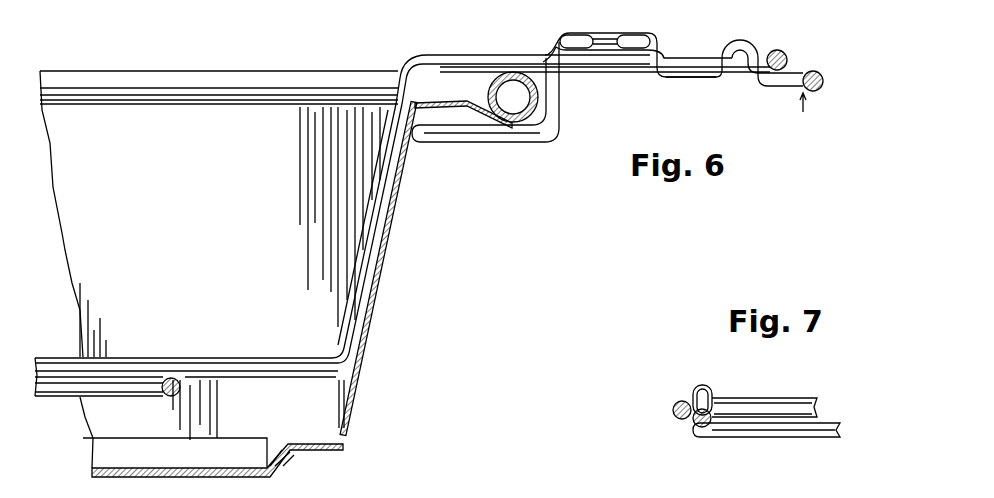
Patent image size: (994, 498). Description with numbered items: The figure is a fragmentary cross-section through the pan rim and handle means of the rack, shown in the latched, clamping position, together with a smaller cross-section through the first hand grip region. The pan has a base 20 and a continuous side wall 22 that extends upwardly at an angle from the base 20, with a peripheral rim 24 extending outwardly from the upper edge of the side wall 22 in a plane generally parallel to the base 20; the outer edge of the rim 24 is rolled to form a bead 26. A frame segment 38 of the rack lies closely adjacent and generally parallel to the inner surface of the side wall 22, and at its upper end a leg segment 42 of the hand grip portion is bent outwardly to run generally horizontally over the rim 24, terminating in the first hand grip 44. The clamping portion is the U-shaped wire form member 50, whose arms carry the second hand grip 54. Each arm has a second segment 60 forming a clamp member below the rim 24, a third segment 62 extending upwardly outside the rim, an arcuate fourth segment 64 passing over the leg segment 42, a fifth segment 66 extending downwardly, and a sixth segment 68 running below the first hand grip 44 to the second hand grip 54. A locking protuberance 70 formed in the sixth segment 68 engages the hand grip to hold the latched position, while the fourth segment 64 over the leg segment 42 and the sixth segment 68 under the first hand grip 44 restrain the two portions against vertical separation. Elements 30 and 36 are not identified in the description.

In FIG. 6, the base 20 is at (228, 467).
In FIG. 6, the side wall 22 is at (143, 117).
In FIG. 6, the rim 24 is at (443, 102).
In FIG. 6, the bead 26 is at (235, 80).
In FIG. 6, the bead 30 is at (180, 393).
In FIG. 6, the ledge 36 is at (263, 360).
In FIG. 6, the frame segment 38 is at (367, 295).
In FIG. 6, the leg segment 42 is at (627, 70).
In FIG. 7, the leg segment 42 is at (672, 408).
In FIG. 6, the first hand grip 44 is at (807, 25).
In FIG. 7, the first hand grip 44 is at (792, 373).
In FIG. 6, the wire form member 50 is at (803, 112).
In FIG. 6, the second hand grip 54 is at (820, 90).
In FIG. 7, the second hand grip 54 is at (772, 432).
In FIG. 6, the second segment 60 is at (470, 133).
In FIG. 6, the third segment 62 is at (550, 88).
In FIG. 6, the fourth segment 64 is at (573, 33).
In FIG. 6, the fifth segment 66 is at (680, 15).
In FIG. 6, the sixth segment 68 is at (697, 77).
In FIG. 7, the sixth segment 68 is at (693, 423).
In FIG. 6, the locking protuberance 70 is at (758, 20).
In FIG. 7, the locking protuberance 70 is at (707, 385).